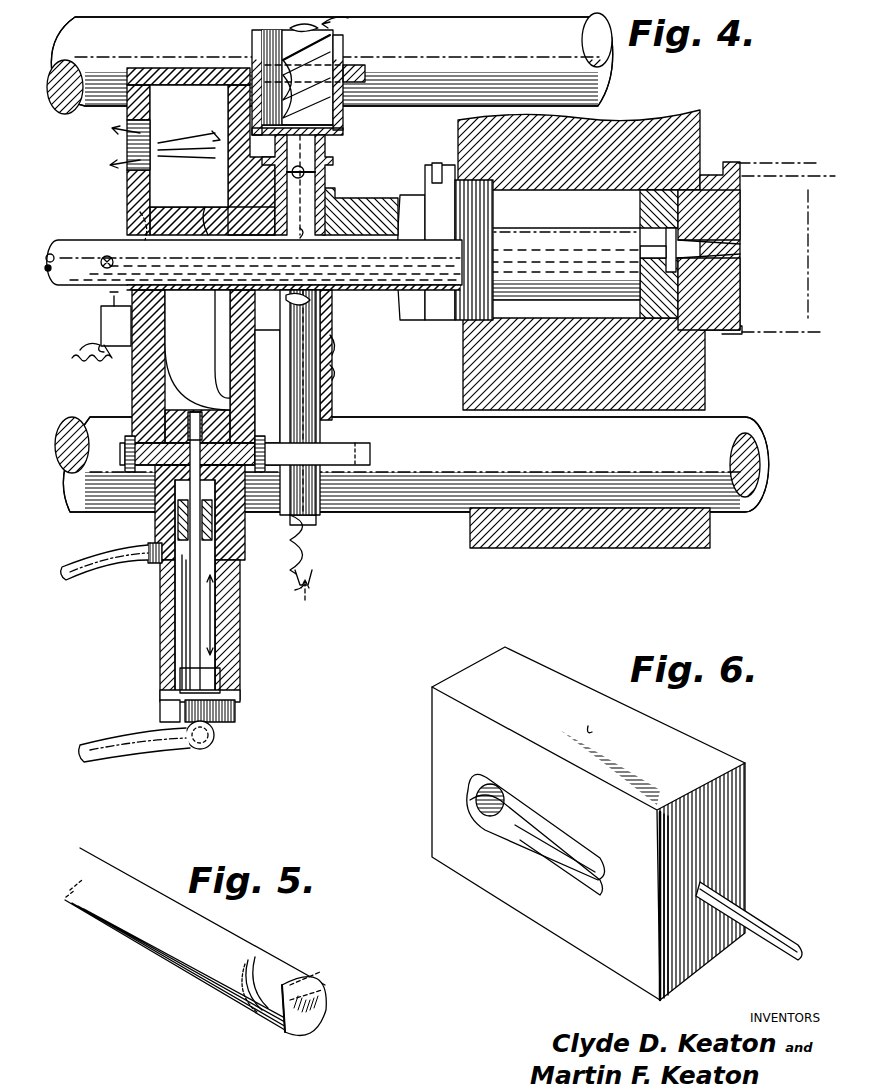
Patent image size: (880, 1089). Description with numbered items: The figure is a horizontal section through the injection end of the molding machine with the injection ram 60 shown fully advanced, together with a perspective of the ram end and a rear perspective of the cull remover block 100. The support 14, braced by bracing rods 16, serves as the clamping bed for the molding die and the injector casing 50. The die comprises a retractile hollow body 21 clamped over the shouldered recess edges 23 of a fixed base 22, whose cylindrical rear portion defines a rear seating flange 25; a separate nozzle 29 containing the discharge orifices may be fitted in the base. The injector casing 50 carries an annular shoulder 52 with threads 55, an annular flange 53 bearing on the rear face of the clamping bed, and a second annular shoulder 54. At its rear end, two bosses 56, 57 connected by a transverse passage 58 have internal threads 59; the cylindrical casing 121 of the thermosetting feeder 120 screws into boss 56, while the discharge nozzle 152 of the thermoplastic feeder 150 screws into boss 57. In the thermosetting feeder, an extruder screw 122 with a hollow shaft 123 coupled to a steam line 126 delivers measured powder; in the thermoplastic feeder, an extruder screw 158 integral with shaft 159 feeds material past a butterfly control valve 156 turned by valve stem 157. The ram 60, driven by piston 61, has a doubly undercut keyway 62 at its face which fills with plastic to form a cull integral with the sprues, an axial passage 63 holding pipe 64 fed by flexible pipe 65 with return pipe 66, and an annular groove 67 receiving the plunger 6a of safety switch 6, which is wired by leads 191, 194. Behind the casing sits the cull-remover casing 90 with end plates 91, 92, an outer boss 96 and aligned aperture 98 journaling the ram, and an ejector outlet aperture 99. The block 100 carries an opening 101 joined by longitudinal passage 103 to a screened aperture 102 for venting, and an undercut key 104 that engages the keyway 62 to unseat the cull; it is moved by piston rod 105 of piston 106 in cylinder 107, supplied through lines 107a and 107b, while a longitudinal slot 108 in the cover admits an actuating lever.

In FIG. 4, the safety switch 6 is at (116, 326).
In FIG. 4, the plunger 6a is at (110, 296).
In FIG. 4, the support 14 is at (594, 378).
In FIG. 4, the bracing rods 16 is at (512, 50).
In FIG. 4, the retractile hollow body 21 is at (782, 340).
In FIG. 4, the fixed base 22 is at (708, 342).
In FIG. 4, the shouldered recess edges 23 is at (733, 336).
In FIG. 4, the rear seating flange 25 is at (708, 162).
In FIG. 4, the nozzle 29 is at (720, 248).
In FIG. 4, the injector casing 50 is at (572, 222).
In FIG. 4, the annular shoulder 52 is at (496, 208).
In FIG. 4, the annular flange 53 is at (428, 190).
In FIG. 4, the second annular shoulder 54 is at (412, 205).
In FIG. 4, the threads 55 is at (472, 170).
In FIG. 4, the boss 56 is at (346, 350).
In FIG. 4, the boss 57 is at (335, 194).
In FIG. 4, the transverse passage 58 is at (304, 239).
In FIG. 4, the internal threads 59 is at (343, 374).
In FIG. 4, the injection ram 60 is at (92, 234).
In FIG. 5, the injection ram 60 is at (178, 927).
In FIG. 5, the piston 61 is at (325, 985).
In FIG. 4, the keyway 62 is at (700, 226).
In FIG. 5, the keyway 62 is at (284, 1028).
In FIG. 4, the axial passage 63 is at (668, 245).
In FIG. 4, the pipe 64 is at (640, 250).
In FIG. 4, the flexible pipe 65 is at (108, 256).
In FIG. 4, the return pipe 66 is at (47, 255).
In FIG. 5, the annular groove 67 is at (262, 968).
In FIG. 4, the cull-remover casing 90 is at (123, 391).
In FIG. 4, the end plate 91 is at (372, 452).
In FIG. 4, the end plate 92 is at (376, 63).
In FIG. 4, the outer boss 96 is at (267, 386).
In FIG. 4, the aperture 98 is at (138, 222).
In FIG. 4, the aperture 99 is at (125, 155).
In FIG. 4, the cull remover block 100 is at (174, 200).
In FIG. 6, the cull remover block 100 is at (500, 758).
In FIG. 4, the opening 101 is at (210, 210).
In FIG. 6, the opening 101 is at (505, 806).
In FIG. 4, the screened aperture 102 is at (228, 385).
In FIG. 4, the longitudinal passage 103 is at (200, 308).
In FIG. 6, the undercut key 104 is at (560, 842).
In FIG. 4, the piston rod 105 is at (190, 620).
In FIG. 6, the piston rod 105 is at (778, 925).
In FIG. 4, the piston 106 is at (212, 688).
In FIG. 4, the cylinder 107 is at (242, 645).
In FIG. 4, the line 107a is at (132, 742).
In FIG. 4, the line 107b is at (116, 556).
In FIG. 6, the longitudinal slot 108 is at (590, 720).
In FIG. 4, the thermosetting plastic molding powder feeder 120 is at (337, 434).
In FIG. 4, the cylindrical casing 121 is at (322, 397).
In FIG. 4, the extruder screw 122 is at (325, 332).
In FIG. 4, the hollow shaft 123 is at (296, 570).
In FIG. 4, the line 126 is at (312, 566).
In FIG. 4, the thermoplastic feeder 150 is at (247, 58).
In FIG. 4, the discharge nozzle 152 is at (343, 128).
In FIG. 4, the butterfly control valve 156 is at (310, 167).
In FIG. 4, the valve stem 157 is at (315, 173).
In FIG. 4, the extruder screw 158 is at (343, 62).
In FIG. 4, the shaft 159 is at (275, 30).
In FIG. 4, the lead 191 is at (84, 348).
In FIG. 4, the lead 194 is at (72, 358).